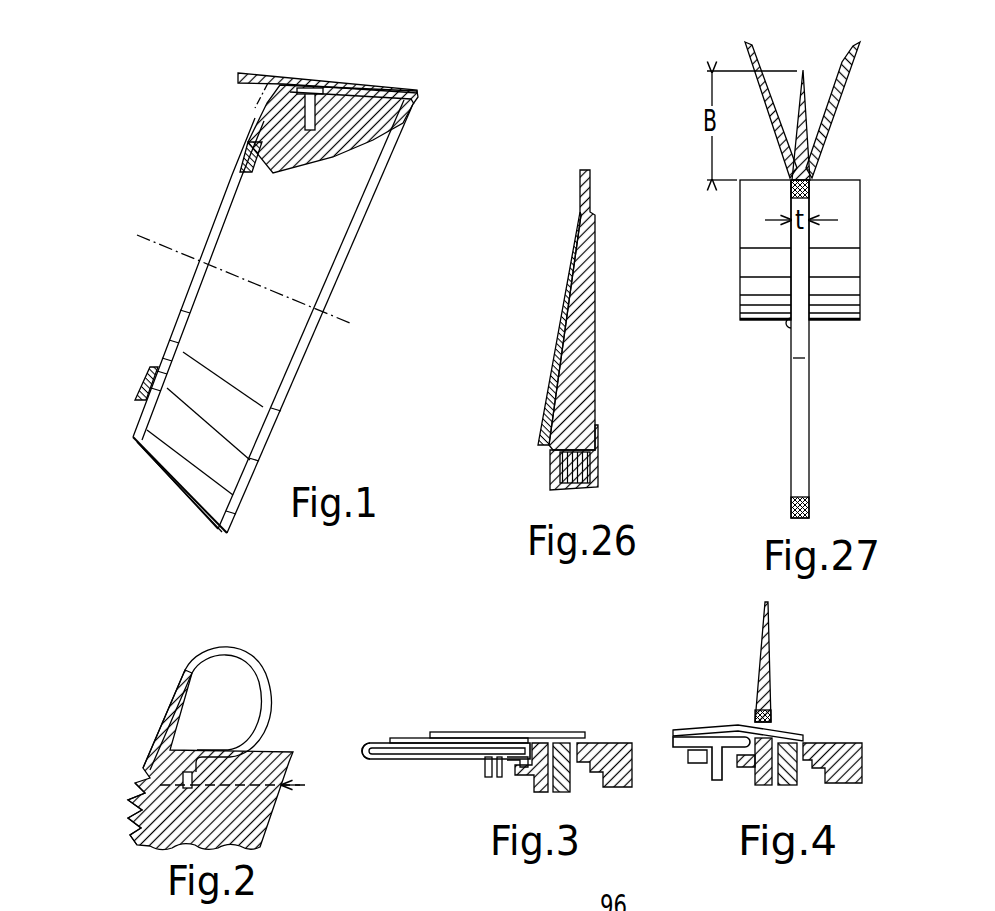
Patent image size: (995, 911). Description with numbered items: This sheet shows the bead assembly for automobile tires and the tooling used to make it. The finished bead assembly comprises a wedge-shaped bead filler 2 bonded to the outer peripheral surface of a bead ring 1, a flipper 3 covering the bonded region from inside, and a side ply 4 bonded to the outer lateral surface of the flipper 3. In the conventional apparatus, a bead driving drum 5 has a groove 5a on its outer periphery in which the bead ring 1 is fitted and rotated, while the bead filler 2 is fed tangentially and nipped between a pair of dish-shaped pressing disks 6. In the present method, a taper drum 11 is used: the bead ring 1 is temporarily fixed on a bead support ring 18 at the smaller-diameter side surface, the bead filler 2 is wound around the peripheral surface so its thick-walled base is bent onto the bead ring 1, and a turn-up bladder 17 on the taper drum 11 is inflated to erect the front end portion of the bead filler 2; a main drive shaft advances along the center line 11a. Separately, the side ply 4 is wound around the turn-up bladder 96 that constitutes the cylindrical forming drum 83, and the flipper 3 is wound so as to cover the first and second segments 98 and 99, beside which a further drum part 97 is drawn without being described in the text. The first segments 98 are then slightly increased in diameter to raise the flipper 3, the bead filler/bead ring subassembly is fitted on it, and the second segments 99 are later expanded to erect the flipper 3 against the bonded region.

In FIG. 1, the bead ring 1 is at (250, 126).
In FIG. 26, the bead ring 1 is at (600, 480).
In FIG. 27, the bead ring 1 is at (809, 422).
In FIG. 2, the bead ring 1 is at (132, 787).
In FIG. 1, the bead filler 2 is at (287, 73).
In FIG. 26, the bead filler 2 is at (587, 345).
In FIG. 27, the bead filler 2 is at (804, 68).
In FIG. 2, the bead filler 2 is at (160, 747).
In FIG. 4, the bead filler 2 is at (768, 633).
In FIG. 26, the flipper 3 is at (598, 438).
In FIG. 3, the flipper 3 is at (487, 732).
In FIG. 4, the flipper 3 is at (740, 723).
In FIG. 26, the side ply 4 is at (548, 370).
In FIG. 3, the side ply 4 is at (418, 740).
In FIG. 4, the side ply 4 is at (685, 743).
In FIG. 27, the bead driving drum 5 is at (857, 323).
In FIG. 27, the groove 5a is at (790, 325).
In FIG. 27, the pressing disks 6 is at (748, 53).
In FIG. 1, the taper drum 11 is at (283, 337).
In FIG. 2, the taper drum 11 is at (257, 822).
In FIG. 1, the center line 11a is at (153, 240).
In FIG. 1, the turn-up bladder 17 is at (393, 78).
In FIG. 2, the turn-up bladder 17 is at (258, 660).
In FIG. 1, the bead support ring 18 is at (240, 143).
In FIG. 2, the bead support ring 18 is at (132, 800).
In FIG. 3, the forming drum 83 is at (462, 785).
In FIG. 4, the forming drum 83 is at (843, 713).
In FIG. 3, the turn-up bladder 96 is at (380, 740).
In FIG. 3, the carrier block 97 is at (617, 742).
In FIG. 4, the carrier block 97 is at (860, 752).
In FIG. 3, the first segments 98 is at (530, 732).
In FIG. 4, the first segments 98 is at (777, 722).
In FIG. 3, the second segments 99 is at (575, 735).
In FIG. 4, the second segments 99 is at (798, 727).